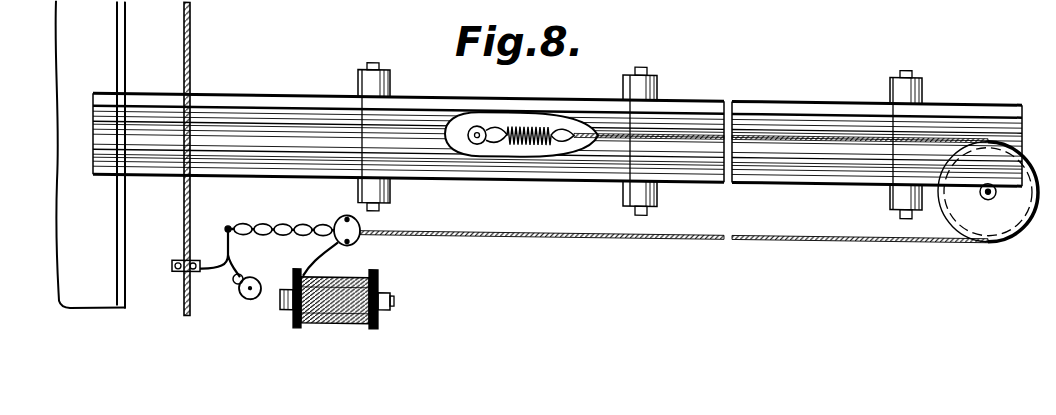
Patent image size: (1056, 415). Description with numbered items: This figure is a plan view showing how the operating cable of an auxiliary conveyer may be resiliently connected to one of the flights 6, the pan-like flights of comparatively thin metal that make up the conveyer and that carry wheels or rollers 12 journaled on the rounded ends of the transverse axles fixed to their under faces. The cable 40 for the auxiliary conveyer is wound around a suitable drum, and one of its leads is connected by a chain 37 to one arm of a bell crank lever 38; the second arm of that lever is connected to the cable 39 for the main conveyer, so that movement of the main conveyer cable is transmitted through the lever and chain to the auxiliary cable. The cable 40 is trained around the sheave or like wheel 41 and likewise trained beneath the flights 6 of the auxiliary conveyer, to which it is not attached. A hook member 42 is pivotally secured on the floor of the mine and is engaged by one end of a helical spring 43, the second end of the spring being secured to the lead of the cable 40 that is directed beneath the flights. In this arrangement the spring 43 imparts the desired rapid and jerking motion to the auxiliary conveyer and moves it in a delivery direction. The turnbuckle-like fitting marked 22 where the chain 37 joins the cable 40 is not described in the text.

The flights 6 is at (297, 92).
The wheels or rollers 12 is at (658, 73).
The turnbuckle 22 is at (347, 230).
The chain 37 is at (266, 221).
The bell crank lever 38 is at (233, 245).
The cable for the main conveyer 39 is at (184, 213).
The cable 40 is at (626, 231).
The sheave or like wheel 41 is at (995, 208).
The hook member 42 is at (487, 138).
The helical spring 43 is at (530, 139).